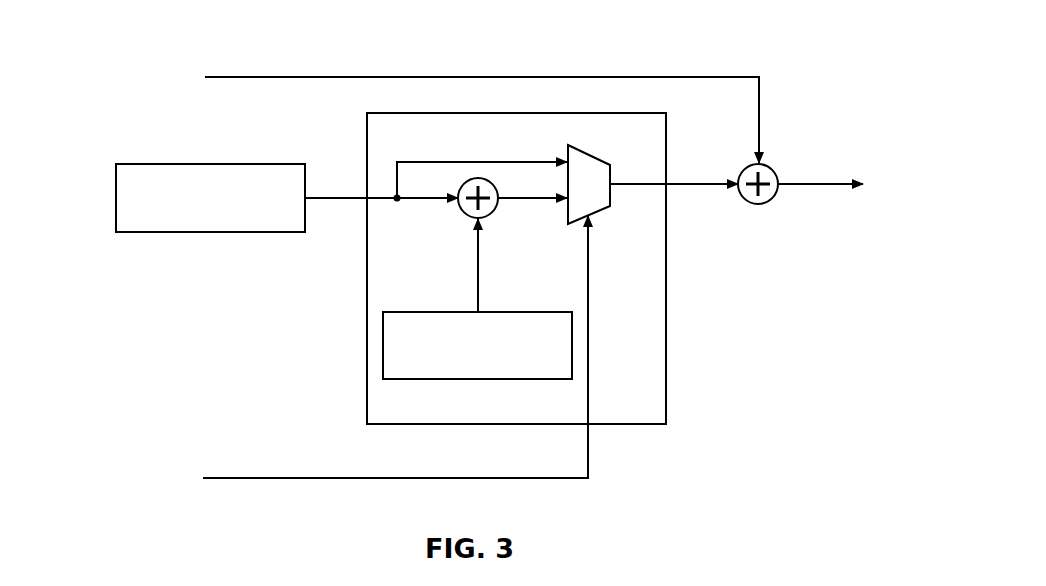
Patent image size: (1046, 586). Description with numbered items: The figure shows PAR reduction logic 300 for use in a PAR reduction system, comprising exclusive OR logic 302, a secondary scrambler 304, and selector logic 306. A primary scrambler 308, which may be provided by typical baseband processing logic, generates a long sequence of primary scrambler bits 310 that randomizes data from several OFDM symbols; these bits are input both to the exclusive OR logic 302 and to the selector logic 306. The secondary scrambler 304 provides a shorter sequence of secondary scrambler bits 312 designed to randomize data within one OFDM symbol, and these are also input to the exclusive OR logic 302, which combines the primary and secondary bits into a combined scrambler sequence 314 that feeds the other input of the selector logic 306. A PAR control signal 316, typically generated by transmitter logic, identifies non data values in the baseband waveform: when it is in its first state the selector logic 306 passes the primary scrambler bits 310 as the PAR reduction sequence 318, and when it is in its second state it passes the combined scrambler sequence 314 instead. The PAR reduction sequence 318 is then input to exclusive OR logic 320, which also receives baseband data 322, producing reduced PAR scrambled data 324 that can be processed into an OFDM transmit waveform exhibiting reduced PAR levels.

The PAR reduction logic 300 is at (666, 325).
The exclusive OR logic 302 is at (465, 216).
The secondary scrambler 304 is at (472, 382).
The selector logic 306 is at (587, 148).
The primary scrambler 308 is at (138, 164).
The primary scrambler bits 310 is at (340, 196).
The secondary scrambler bits 312 is at (477, 263).
The combined scrambler sequence 314 is at (510, 200).
The PAR control signal 316 is at (387, 478).
The PAR reduction sequence 318 is at (683, 185).
The exclusive OR logic 320 is at (774, 198).
The baseband data 322 is at (553, 77).
The reduced PAR scrambled data 324 is at (795, 184).